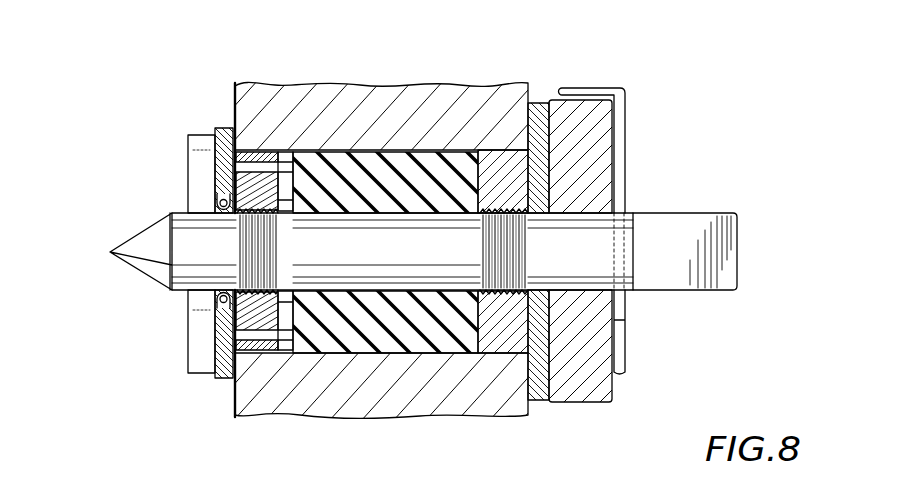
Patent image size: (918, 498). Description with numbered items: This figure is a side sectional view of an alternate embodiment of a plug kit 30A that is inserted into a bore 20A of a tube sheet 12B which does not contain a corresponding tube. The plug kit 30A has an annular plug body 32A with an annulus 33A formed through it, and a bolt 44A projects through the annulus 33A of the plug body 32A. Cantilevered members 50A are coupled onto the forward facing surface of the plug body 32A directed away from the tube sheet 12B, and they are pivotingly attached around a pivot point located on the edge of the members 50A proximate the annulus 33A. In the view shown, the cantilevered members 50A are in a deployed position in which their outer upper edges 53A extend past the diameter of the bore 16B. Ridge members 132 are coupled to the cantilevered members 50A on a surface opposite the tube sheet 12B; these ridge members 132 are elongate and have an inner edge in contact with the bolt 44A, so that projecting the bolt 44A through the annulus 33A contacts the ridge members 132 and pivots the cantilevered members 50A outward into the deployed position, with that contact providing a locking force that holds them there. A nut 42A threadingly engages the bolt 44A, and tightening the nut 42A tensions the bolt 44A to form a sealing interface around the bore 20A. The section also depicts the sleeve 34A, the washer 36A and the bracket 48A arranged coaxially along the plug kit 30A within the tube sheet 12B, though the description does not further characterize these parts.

The tube sheet 12B is at (315, 102).
The plug body 32A is at (257, 153).
The ridge members 132 is at (200, 158).
The outer upper edges 53A is at (218, 377).
The cantilevered members 50A is at (222, 332).
The annulus 33A is at (154, 297).
The bore 20A is at (347, 293).
The insulating sleeve 34A is at (402, 337).
The bore 16B is at (443, 348).
The washer 36A is at (543, 408).
The nut 42A is at (592, 382).
The bolt 44A is at (678, 208).
The bracket 48A is at (626, 130).
The plug kit 30A is at (756, 200).